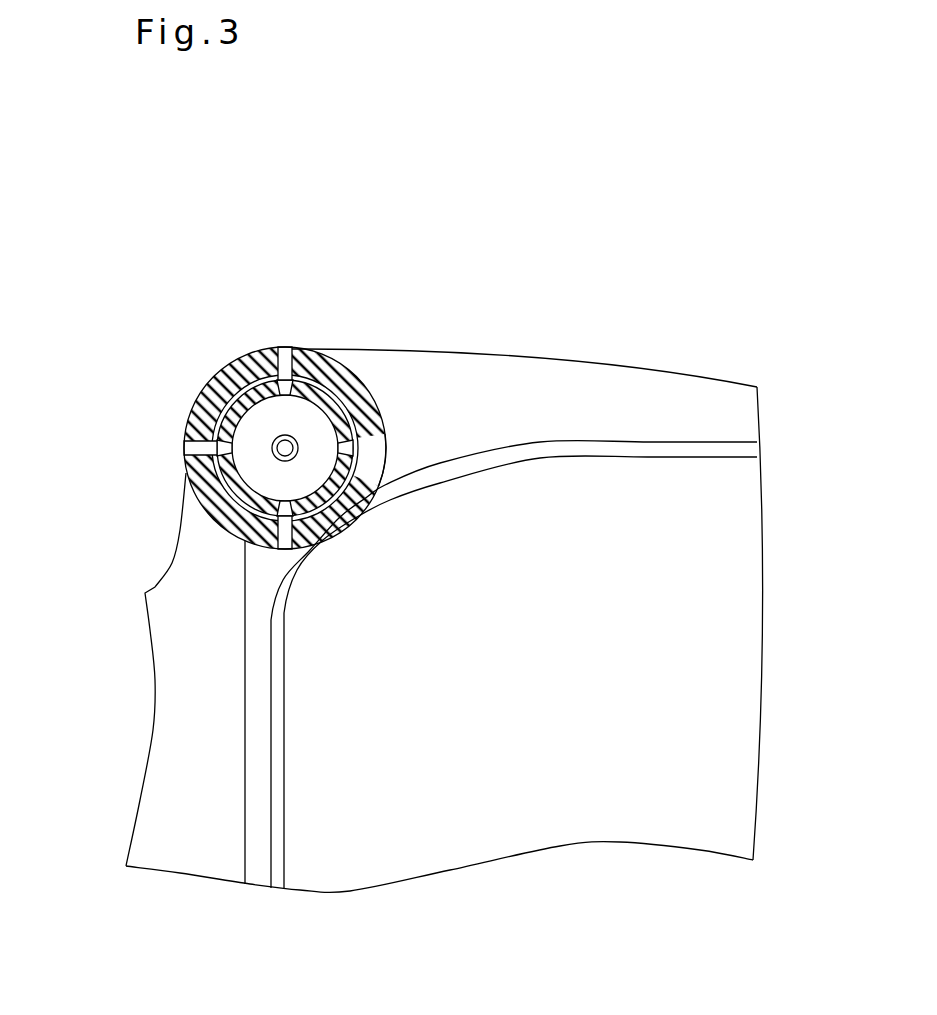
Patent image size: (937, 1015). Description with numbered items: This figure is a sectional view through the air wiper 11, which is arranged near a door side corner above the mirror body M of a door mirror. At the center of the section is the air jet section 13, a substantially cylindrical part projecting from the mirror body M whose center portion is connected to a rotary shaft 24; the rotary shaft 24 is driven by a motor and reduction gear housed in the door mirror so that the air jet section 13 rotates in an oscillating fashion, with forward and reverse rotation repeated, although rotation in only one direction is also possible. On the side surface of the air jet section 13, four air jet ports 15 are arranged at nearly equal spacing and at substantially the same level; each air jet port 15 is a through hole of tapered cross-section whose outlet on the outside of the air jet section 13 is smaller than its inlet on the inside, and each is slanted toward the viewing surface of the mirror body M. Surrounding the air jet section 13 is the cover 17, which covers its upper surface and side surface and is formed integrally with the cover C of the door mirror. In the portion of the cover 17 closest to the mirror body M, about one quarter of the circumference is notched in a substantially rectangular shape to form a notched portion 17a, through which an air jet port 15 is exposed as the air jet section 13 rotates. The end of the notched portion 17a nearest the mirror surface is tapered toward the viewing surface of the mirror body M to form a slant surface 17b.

The air wiper 11 is at (245, 320).
The air jet section 13 is at (216, 398).
The air jet ports 15 is at (285, 385).
The cover 17 is at (340, 362).
The notched portion 17a is at (388, 463).
The slant surface 17b is at (370, 478).
The rotary shaft 24 is at (273, 458).
The mirror body M is at (730, 612).
The cover of the door mirror C is at (175, 687).